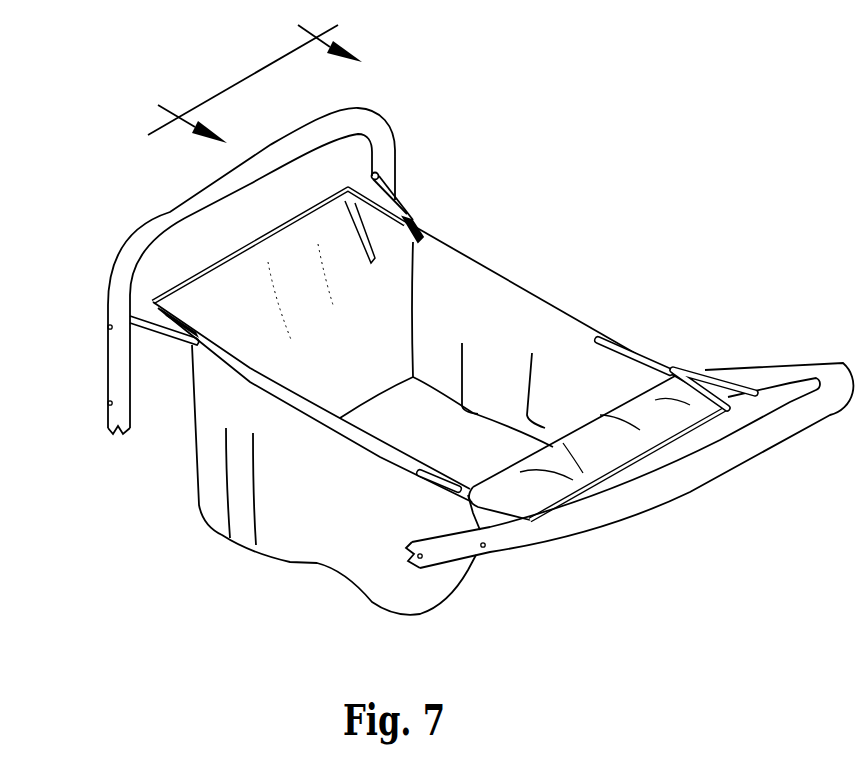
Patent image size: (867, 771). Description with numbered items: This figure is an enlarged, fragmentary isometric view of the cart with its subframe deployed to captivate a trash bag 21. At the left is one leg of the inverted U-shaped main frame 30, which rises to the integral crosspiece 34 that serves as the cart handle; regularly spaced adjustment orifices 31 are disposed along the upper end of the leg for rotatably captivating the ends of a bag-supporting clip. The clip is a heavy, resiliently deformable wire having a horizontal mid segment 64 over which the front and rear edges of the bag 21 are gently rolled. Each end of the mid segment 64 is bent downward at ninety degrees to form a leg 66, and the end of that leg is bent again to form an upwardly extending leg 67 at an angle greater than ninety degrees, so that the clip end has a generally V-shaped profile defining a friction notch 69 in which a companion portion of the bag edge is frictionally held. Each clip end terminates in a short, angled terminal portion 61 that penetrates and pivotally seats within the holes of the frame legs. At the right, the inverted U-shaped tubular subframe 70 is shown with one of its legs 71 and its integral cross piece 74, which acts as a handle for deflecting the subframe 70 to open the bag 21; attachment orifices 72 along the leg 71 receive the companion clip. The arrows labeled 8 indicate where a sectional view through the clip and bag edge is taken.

The section line 8- 8 is at (244, 71).
The trash bag 21 is at (217, 500).
The main frame 30 is at (101, 214).
The adjustment orifices 31 is at (108, 329).
The crosspiece 34 is at (282, 151).
The terminal portion 61 is at (382, 182).
The mid segment 64 is at (251, 245).
The leg 66 is at (146, 300).
The upwardly extending leg 67 is at (166, 333).
The friction notch 69 is at (752, 407).
The subframe 70 is at (741, 497).
The legs 71 is at (523, 535).
The fastener holes 72 is at (377, 178).
The cross piece 74 is at (757, 434).